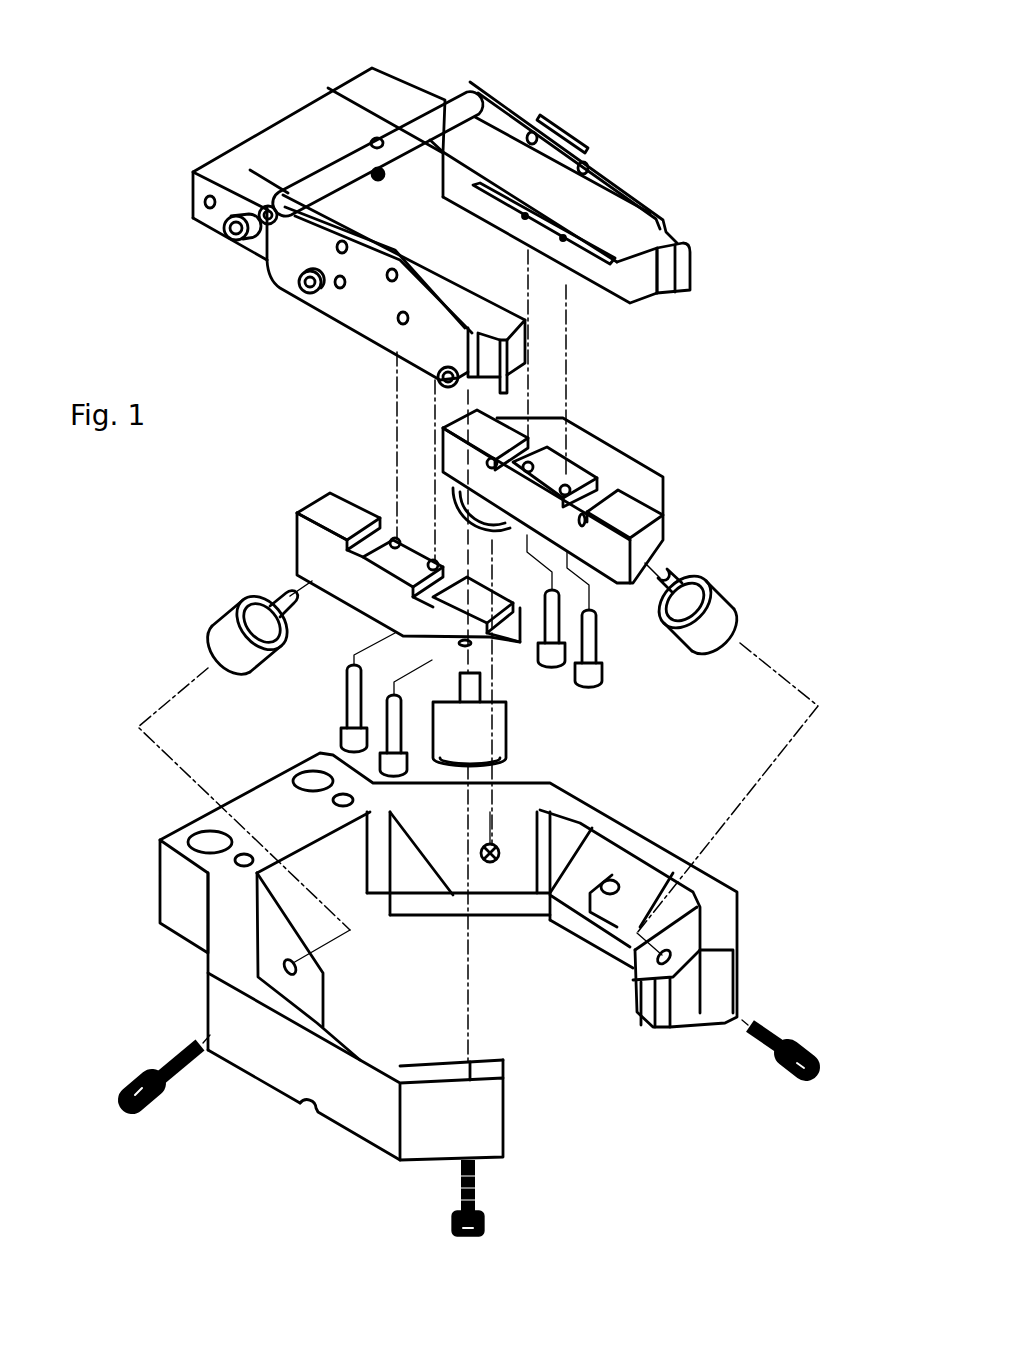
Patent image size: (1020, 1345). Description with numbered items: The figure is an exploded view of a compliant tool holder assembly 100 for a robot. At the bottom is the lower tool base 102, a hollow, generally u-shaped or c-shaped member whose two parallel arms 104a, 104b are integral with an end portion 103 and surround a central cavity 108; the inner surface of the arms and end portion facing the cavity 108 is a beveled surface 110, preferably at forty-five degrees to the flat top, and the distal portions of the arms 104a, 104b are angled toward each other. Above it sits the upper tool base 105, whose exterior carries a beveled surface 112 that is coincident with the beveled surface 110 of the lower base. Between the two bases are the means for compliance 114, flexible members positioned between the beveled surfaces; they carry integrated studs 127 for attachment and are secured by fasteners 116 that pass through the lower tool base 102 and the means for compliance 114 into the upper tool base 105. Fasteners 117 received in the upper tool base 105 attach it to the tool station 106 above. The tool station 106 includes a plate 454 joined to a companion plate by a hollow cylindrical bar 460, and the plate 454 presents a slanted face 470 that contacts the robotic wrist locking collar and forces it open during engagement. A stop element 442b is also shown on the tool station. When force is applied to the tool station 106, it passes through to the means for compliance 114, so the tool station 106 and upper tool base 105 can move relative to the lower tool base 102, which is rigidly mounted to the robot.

The tool holder assembly 100 is at (150, 113).
The lower tool base 102 is at (548, 1134).
The end portion 103 is at (232, 825).
The parallel arm 104a is at (360, 1097).
The parallel arm 104b is at (717, 922).
The upper tool base 105 is at (480, 433).
The tool station 106 is at (694, 227).
The cavity 108 is at (500, 898).
The beveled surface 110 is at (515, 872).
The beveled surface 112 is at (480, 640).
The means for compliance 114 is at (717, 622).
The fasteners 116 is at (810, 1057).
The fasteners 117 is at (595, 657).
The integrated studs 127 is at (270, 600).
The stop block 442b is at (680, 273).
The plate 454 is at (568, 123).
The hollow cylindrical bar 460 is at (362, 160).
The slanted face 470 is at (640, 197).